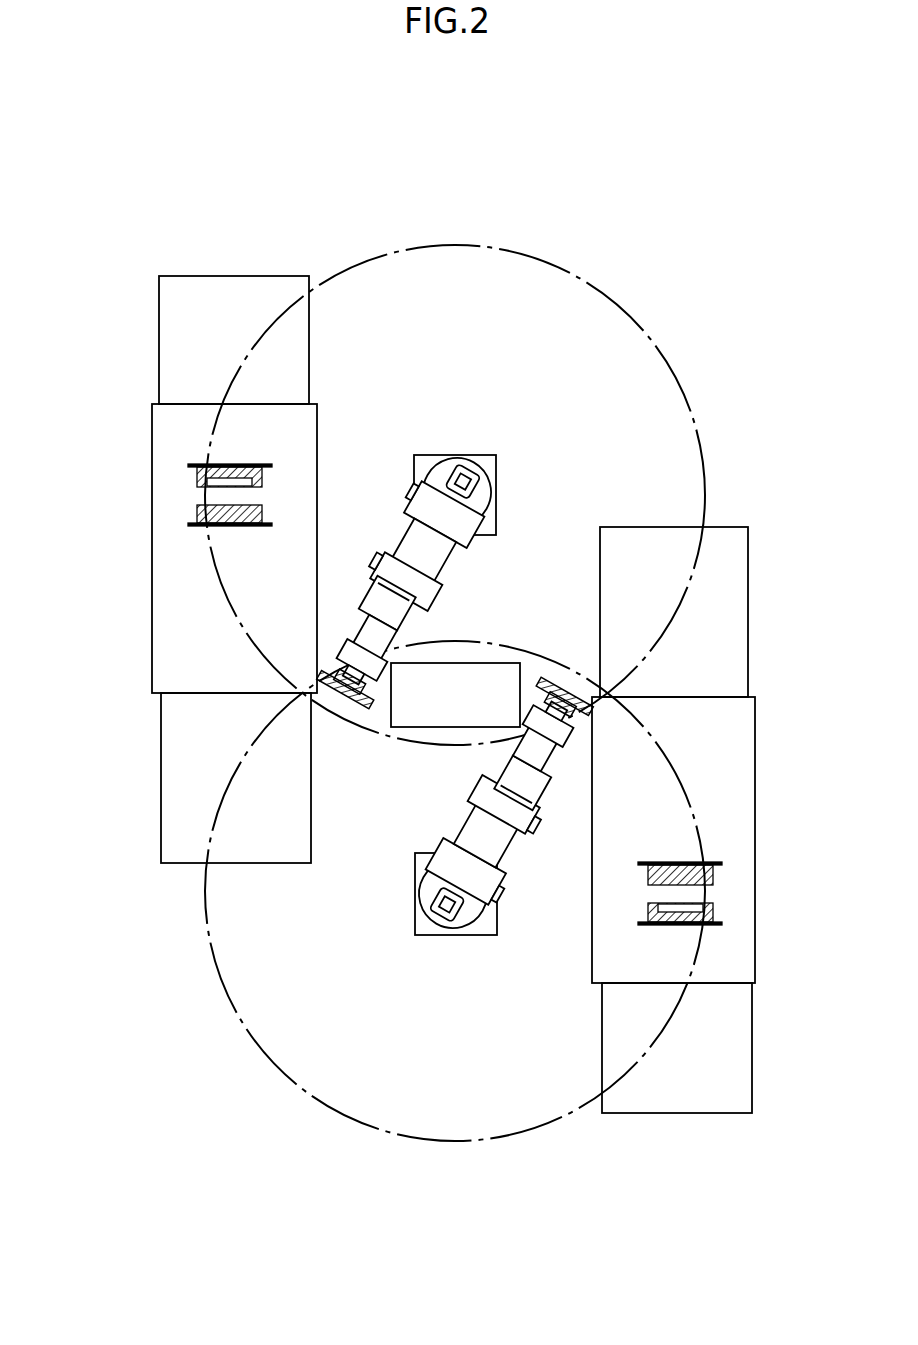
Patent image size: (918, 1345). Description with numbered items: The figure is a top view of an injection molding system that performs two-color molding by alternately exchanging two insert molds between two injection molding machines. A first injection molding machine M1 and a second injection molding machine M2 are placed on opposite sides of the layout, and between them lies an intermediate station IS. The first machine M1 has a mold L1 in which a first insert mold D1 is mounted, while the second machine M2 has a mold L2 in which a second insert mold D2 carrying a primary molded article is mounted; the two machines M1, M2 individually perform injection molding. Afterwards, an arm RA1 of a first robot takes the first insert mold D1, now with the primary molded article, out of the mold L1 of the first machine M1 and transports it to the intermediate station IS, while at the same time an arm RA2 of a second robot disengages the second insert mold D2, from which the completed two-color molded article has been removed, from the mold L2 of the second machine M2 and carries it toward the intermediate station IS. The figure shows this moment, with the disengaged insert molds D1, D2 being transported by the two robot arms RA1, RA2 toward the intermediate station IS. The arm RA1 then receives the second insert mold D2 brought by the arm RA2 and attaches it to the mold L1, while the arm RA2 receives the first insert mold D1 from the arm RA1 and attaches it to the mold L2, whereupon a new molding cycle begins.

The first injection molding machine M1 is at (669, 1115).
The second injection molding machine M2 is at (247, 275).
The arm of first robot RA1 is at (446, 940).
The arm of second robot RA2 is at (440, 454).
The first insert mold D1 is at (562, 694).
The second insert mold D2 is at (342, 692).
The mold of first injection molding machine L1 is at (724, 920).
The mold of second injection molding machine L2 is at (187, 523).
The intermediate station IS is at (415, 730).